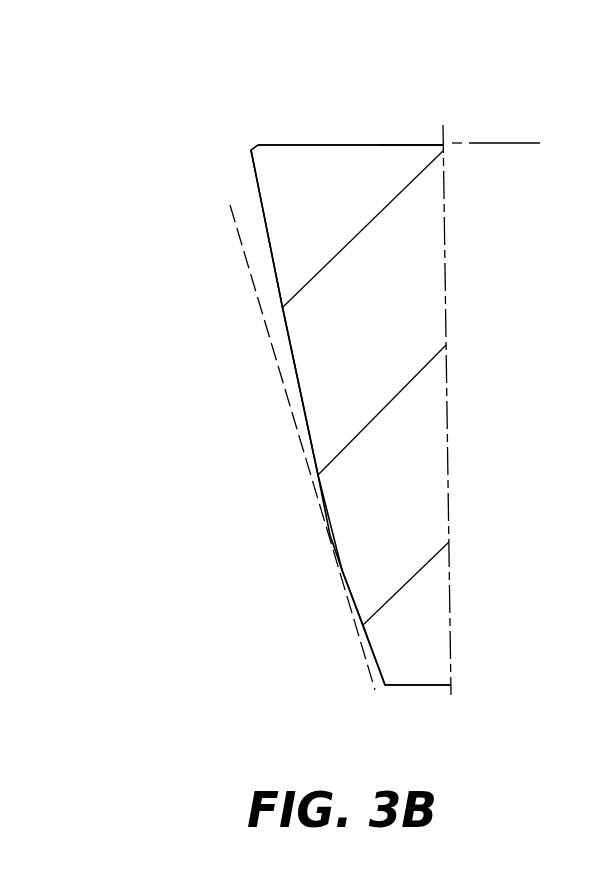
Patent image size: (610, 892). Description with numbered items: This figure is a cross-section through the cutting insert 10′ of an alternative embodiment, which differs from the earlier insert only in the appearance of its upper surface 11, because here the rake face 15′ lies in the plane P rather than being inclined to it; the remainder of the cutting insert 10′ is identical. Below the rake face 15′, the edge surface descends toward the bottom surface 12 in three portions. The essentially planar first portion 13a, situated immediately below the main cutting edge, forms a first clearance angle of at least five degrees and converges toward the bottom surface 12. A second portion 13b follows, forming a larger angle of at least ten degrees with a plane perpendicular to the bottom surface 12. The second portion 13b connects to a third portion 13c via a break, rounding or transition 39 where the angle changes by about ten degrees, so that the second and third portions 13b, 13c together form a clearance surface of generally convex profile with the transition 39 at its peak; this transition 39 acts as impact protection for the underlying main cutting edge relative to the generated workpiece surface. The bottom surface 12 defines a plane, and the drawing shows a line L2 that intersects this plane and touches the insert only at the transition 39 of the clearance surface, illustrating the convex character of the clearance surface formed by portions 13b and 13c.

The cutting insert 10′ is at (250, 120).
The rake face 15′ is at (332, 145).
The upper surface 11 is at (412, 108).
The plane P is at (503, 143).
The first portion of the edge surface 13a is at (251, 176).
The line L2 is at (252, 278).
The second portion of the edge surface 13b is at (278, 306).
The transition 39 is at (330, 535).
The third portion of the edge surface 13c is at (370, 652).
The bottom surface 12 is at (451, 728).